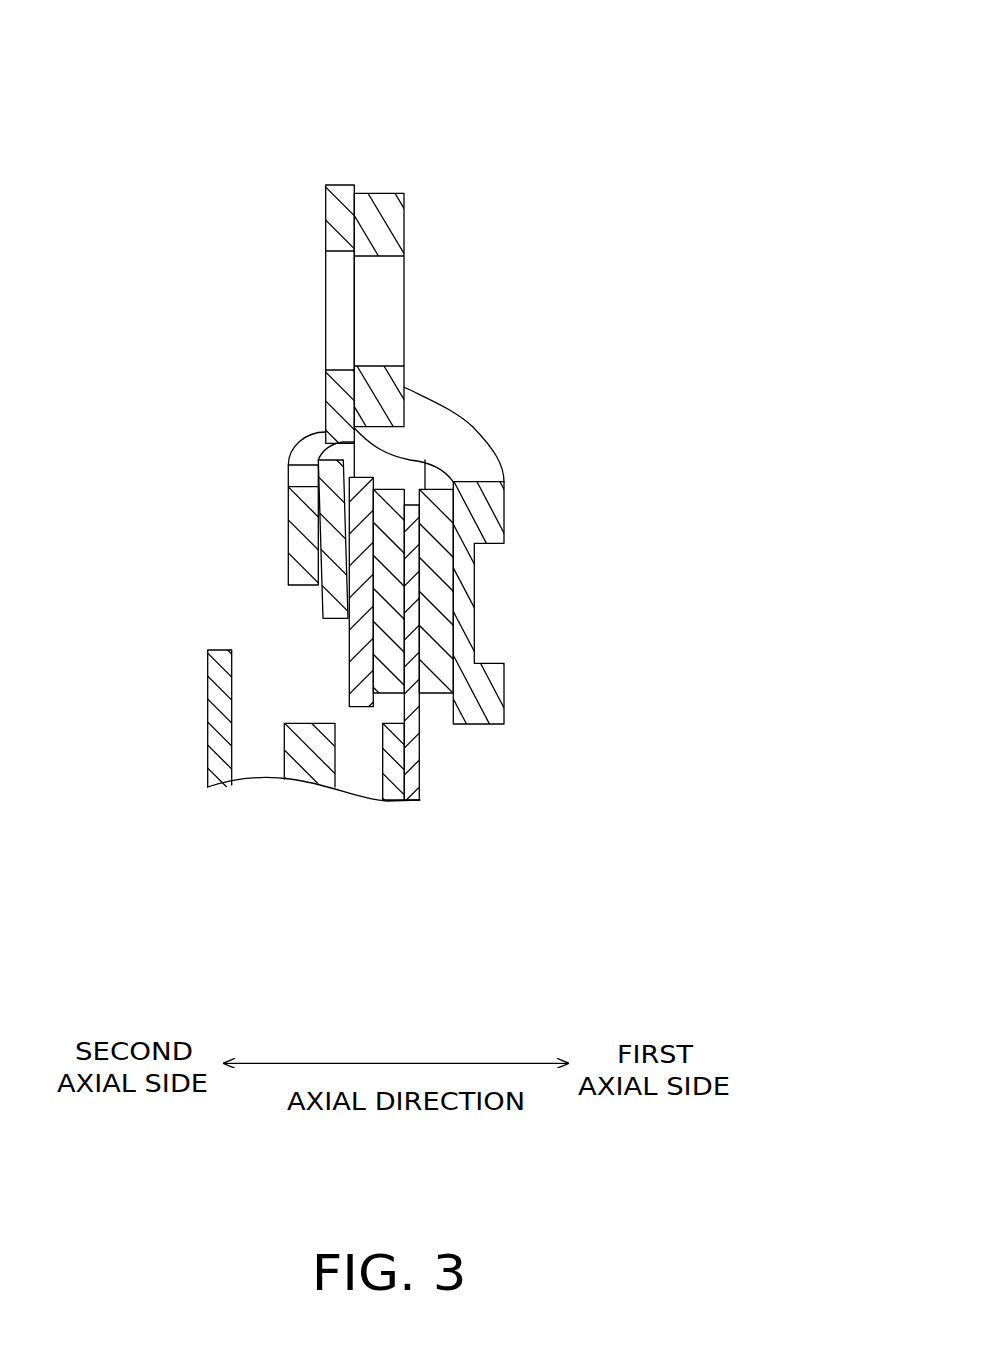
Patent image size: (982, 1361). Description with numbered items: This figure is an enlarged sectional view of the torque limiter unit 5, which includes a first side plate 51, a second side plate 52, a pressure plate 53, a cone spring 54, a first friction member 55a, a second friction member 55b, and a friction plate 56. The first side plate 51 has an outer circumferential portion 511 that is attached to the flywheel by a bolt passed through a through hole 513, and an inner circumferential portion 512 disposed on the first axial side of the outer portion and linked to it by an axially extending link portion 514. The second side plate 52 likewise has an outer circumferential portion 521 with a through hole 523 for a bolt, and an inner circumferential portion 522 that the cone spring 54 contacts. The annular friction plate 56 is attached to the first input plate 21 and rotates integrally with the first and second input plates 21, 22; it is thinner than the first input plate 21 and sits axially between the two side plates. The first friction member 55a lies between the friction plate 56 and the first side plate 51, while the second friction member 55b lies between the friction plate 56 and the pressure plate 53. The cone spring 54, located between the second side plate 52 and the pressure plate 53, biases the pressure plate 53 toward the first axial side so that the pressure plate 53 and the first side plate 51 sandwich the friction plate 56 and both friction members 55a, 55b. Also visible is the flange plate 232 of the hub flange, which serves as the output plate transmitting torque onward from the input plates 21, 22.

The torque limiter unit 5 is at (706, 245).
The first side plate 51 is at (422, 216).
The outer circumferential portion 511 is at (405, 240).
The inner circumferential portion 512 is at (505, 517).
The through hole 513 is at (380, 366).
The link portion 514 is at (463, 433).
The second side plate 52 is at (304, 184).
The outer circumferential portion 521 is at (336, 206).
The inner circumferential portion 522 is at (288, 490).
The through hole 523 is at (342, 370).
The pressure plate 53 is at (349, 670).
The cone spring 54 is at (330, 553).
The first friction member 55a is at (437, 672).
The second friction member 55b is at (400, 677).
The friction plate 56 is at (410, 797).
The first input plate 21 is at (394, 797).
The second input plate 22 is at (213, 747).
The flange plate 232 is at (307, 773).